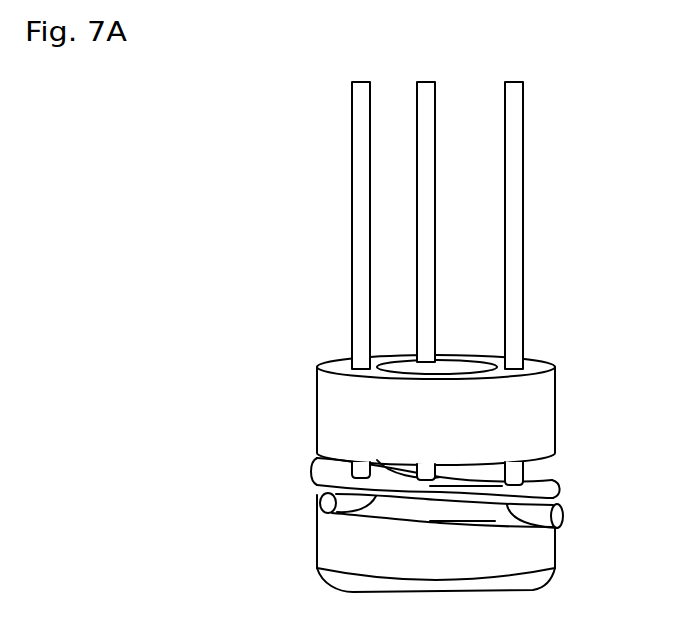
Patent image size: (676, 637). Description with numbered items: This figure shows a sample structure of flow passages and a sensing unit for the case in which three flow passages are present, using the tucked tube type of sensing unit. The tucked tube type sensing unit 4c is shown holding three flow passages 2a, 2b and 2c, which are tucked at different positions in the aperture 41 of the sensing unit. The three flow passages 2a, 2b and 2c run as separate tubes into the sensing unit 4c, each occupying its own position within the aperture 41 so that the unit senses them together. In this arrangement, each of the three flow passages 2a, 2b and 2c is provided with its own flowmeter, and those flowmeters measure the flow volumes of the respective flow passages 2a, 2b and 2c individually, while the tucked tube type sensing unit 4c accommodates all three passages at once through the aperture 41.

The flow passage 2a is at (352, 185).
The flow passage 2b is at (437, 152).
The flow passage 2c is at (525, 183).
The tucked tube type sensing unit 4c is at (316, 407).
The aperture 41 is at (314, 451).